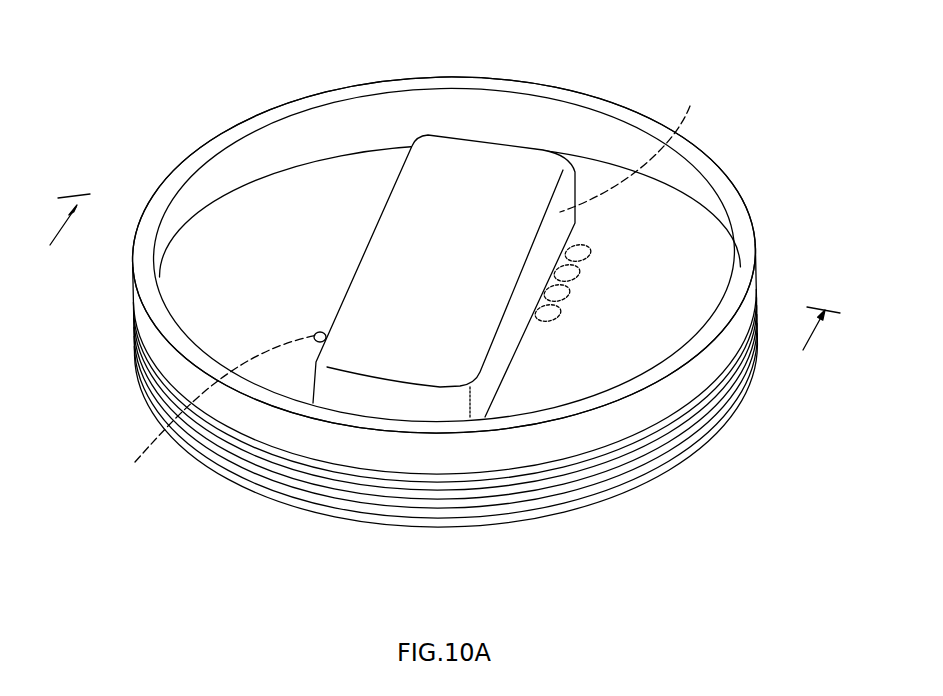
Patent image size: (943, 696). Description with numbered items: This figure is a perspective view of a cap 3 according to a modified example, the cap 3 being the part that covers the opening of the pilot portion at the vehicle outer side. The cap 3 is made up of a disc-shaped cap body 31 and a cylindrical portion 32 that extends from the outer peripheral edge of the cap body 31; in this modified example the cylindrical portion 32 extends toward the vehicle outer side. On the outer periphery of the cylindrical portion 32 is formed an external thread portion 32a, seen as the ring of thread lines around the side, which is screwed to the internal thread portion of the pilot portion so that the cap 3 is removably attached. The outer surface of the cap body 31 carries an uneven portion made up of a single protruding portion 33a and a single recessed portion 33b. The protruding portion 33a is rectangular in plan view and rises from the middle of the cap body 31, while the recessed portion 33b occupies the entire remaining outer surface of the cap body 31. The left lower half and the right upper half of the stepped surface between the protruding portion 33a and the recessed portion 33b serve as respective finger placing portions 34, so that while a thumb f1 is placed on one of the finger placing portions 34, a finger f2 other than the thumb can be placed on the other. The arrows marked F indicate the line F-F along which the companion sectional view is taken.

The cap 3 is at (257, 94).
The cap body 31 is at (319, 94).
The cylindrical portion 32 is at (653, 458).
The external thread portion 32a is at (538, 500).
The protruding portion 33a is at (520, 173).
The recessed portion 33b is at (677, 253).
The finger placing portions 34 is at (583, 245).
The thumb f1 is at (213, 408).
The finger f2 is at (631, 146).
The line F- F is at (441, 288).